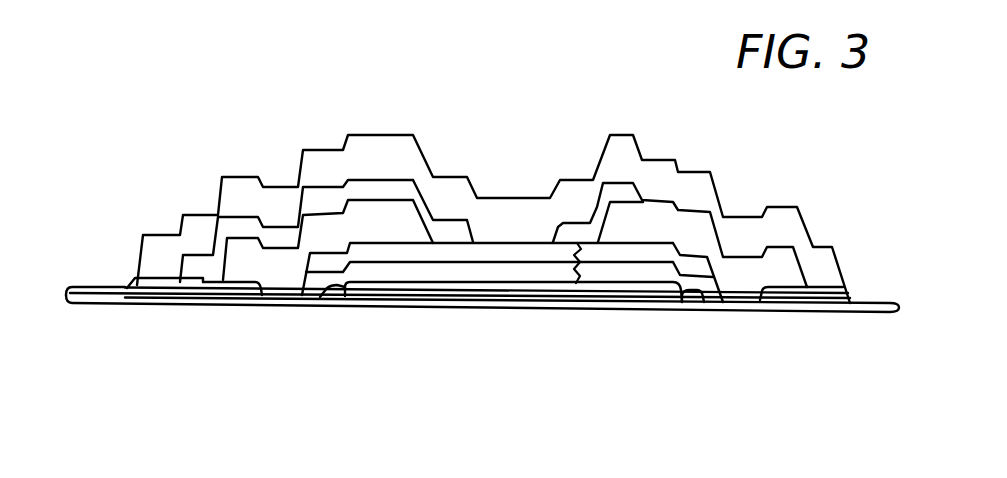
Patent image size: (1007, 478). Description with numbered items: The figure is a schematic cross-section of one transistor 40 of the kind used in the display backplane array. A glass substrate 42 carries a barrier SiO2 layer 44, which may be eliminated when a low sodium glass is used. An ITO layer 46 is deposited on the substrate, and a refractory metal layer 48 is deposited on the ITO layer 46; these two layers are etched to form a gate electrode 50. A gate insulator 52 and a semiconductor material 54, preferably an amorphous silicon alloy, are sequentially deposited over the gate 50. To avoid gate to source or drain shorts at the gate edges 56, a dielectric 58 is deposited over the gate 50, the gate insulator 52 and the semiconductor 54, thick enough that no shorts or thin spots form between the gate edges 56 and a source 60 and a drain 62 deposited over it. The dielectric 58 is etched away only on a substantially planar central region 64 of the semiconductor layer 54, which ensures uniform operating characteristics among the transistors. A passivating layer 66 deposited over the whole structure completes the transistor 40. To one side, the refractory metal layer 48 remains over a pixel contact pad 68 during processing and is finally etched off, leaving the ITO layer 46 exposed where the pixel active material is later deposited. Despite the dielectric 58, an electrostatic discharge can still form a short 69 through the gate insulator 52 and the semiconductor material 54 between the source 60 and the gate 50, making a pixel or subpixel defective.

The transistor 40 is at (718, 159).
The glass substrate 42 is at (532, 397).
The barrier SiO2 layer 44 is at (757, 307).
The ITO layer 46 is at (128, 294).
The refractory metal layer 48 is at (200, 294).
The gate electrode 50 is at (455, 288).
The gate insulator 52 is at (550, 270).
The semiconductor material 54 is at (512, 255).
The gate edges 56 is at (323, 296).
The dielectric 58 is at (394, 229).
The source 60 is at (569, 232).
The drain 62 is at (372, 188).
The substantially planar central region 64 is at (483, 240).
The passivating layer 66 is at (524, 230).
The pixel contact pad 68 is at (88, 288).
The short 69 is at (578, 270).